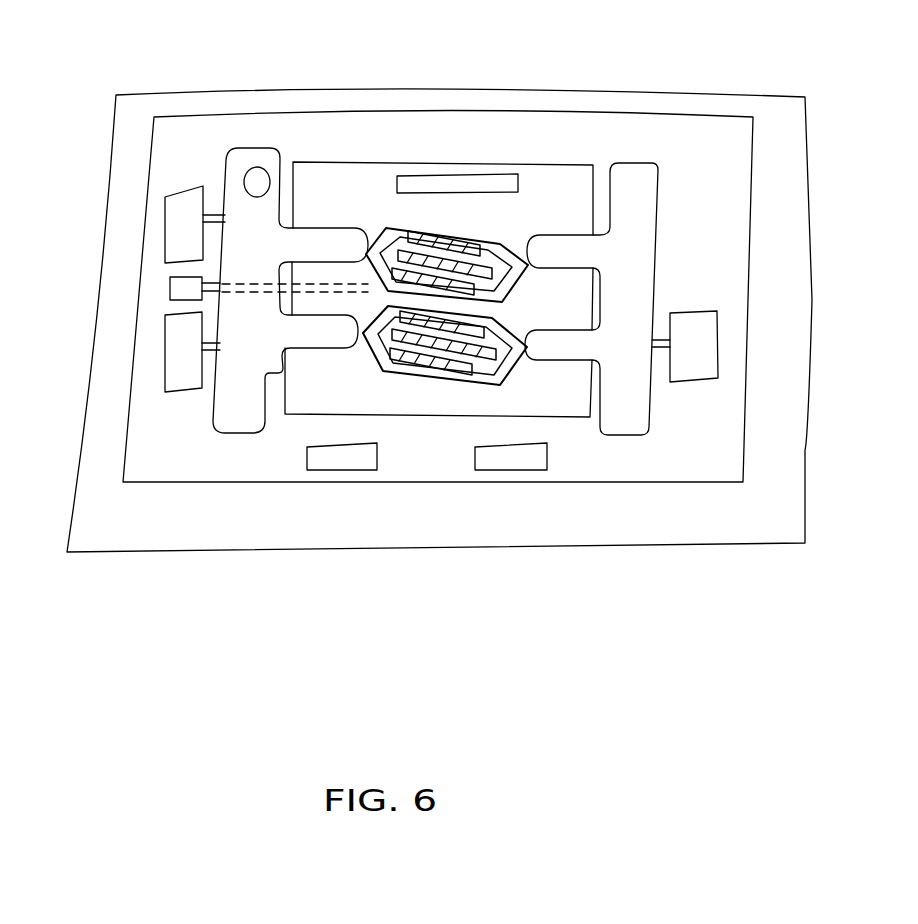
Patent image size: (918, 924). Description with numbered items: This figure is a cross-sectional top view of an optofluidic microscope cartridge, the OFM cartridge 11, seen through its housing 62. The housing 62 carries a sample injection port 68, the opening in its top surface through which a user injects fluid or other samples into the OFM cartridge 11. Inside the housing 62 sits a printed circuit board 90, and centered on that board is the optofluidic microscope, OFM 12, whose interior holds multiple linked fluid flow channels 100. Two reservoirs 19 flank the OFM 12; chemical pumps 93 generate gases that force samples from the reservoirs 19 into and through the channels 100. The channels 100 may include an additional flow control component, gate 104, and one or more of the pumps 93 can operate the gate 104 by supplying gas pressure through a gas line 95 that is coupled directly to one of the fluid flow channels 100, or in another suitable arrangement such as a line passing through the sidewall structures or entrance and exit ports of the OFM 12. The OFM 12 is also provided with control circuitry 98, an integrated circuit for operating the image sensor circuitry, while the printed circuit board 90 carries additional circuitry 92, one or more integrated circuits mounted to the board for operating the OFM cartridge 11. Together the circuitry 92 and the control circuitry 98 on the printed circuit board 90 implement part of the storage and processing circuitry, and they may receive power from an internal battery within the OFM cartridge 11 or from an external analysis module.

The OFM cartridge 11 is at (563, 57).
The OFM 12 is at (533, 163).
The reservoirs 19 is at (244, 435).
The housing 62 is at (690, 95).
The sample injection port 68 is at (256, 182).
The printed circuit board 90 is at (753, 228).
The additional circuitry 92 is at (377, 458).
The chemical pumps 93 is at (165, 216).
The gas line 95 is at (208, 213).
The control circuitry 98 is at (477, 175).
The fluid flow channels 100 is at (415, 230).
The gate 104 is at (383, 320).